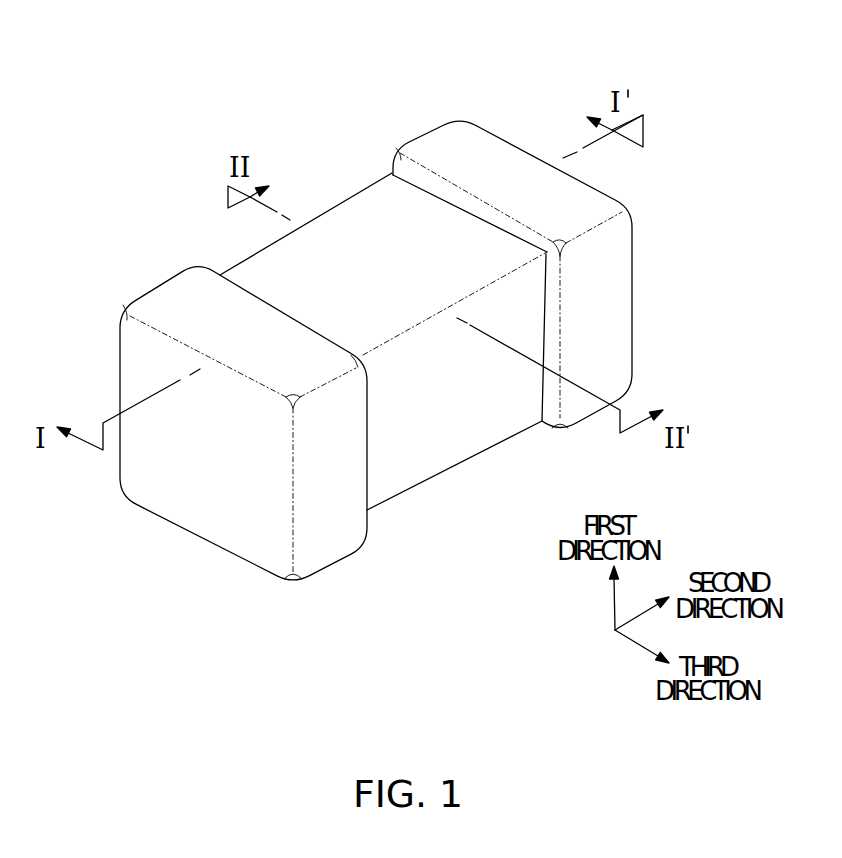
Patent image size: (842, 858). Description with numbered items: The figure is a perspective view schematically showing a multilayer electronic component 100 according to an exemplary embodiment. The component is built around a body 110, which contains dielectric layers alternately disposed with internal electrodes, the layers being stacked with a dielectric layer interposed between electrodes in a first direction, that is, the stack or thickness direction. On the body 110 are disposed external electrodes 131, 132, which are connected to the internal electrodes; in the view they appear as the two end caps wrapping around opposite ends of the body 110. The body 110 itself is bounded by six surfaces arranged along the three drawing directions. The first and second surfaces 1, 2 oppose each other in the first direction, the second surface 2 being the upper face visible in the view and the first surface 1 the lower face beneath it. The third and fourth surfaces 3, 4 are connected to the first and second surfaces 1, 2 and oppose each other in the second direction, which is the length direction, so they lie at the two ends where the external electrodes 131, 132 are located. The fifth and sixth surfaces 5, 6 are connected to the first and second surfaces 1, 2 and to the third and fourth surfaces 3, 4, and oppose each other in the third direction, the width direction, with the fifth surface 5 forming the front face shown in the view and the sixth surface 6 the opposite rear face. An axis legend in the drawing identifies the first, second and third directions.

The multilayer electronic component 100 is at (244, 55).
The body 110 is at (256, 282).
The external electrode 131 is at (172, 290).
The external electrode 132 is at (432, 152).
The first surface 1 is at (398, 466).
The second surface 2 is at (378, 200).
The third surface 3 is at (182, 479).
The fourth surface 4 is at (590, 262).
The fifth surface 5 is at (482, 417).
The sixth surface 6 is at (336, 236).